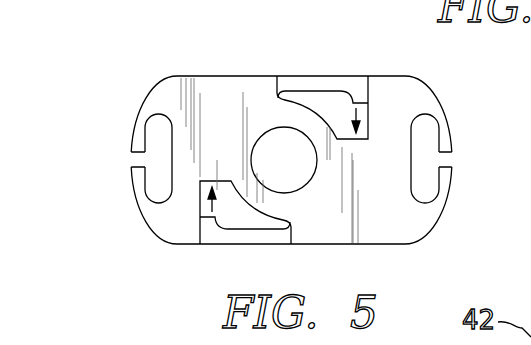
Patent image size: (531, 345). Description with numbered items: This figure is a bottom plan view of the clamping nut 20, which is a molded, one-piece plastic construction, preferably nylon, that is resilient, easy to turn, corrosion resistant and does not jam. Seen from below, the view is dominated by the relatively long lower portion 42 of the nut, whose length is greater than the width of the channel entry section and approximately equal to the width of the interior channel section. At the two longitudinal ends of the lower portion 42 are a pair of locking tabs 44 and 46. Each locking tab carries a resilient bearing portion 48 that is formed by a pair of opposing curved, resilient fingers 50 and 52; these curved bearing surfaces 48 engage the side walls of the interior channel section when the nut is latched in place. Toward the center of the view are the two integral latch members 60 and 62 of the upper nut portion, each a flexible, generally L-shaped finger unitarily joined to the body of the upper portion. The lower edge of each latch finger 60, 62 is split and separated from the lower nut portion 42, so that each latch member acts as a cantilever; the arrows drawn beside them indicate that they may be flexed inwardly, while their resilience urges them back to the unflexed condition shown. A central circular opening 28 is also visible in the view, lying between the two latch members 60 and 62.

The clamping nut 20 is at (128, 96).
The cylindrical opening 28 is at (277, 137).
The lower portion 42 is at (206, 92).
The locking tab 44 is at (180, 244).
The locking tab 46 is at (432, 91).
The resilient bearing portion 48 is at (428, 225).
The resilient finger 50 is at (450, 140).
The resilient finger 52 is at (448, 185).
The latch member 60 is at (233, 244).
The latch member 62 is at (356, 76).